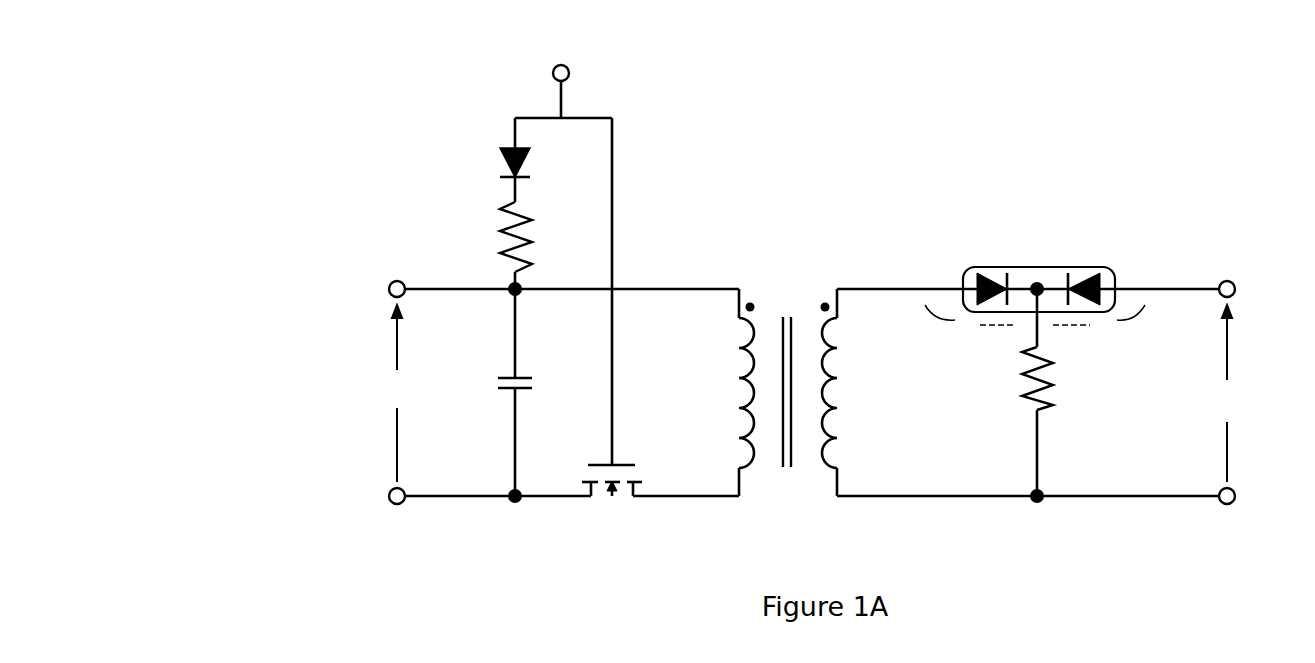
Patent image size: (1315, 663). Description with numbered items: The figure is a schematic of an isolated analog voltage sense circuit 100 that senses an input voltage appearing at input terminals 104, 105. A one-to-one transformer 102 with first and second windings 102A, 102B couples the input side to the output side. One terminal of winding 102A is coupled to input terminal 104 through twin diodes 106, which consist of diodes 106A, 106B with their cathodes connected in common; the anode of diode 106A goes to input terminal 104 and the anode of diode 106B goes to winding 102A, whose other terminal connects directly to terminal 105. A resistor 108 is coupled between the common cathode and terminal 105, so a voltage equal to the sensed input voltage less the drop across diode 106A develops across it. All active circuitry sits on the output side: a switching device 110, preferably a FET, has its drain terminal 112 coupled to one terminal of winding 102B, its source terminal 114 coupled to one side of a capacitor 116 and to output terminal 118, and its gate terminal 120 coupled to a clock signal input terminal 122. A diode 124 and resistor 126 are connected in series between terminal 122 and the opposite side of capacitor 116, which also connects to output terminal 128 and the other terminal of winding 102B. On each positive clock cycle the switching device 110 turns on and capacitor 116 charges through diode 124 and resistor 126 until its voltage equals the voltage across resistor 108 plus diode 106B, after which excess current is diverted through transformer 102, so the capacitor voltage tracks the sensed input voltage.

The isolated analog voltage sense circuit 100 is at (1215, 178).
The transformer 102 is at (788, 370).
The first winding 102A is at (836, 376).
The second winding 102B is at (740, 376).
The input terminal 104 is at (1234, 283).
The input terminal 105 is at (1234, 491).
The twin diodes 106 is at (1055, 267).
The twin diode 106A is at (1090, 272).
The twin diode 106B is at (988, 272).
The resistor 108 is at (1050, 400).
The switching device 110 is at (613, 481).
The drain terminal 112 is at (640, 498).
The source terminal 114 is at (582, 498).
The capacitor 116 is at (531, 379).
The output terminal 118 is at (402, 491).
The gate terminal 120 is at (610, 457).
The clock signal input terminal 122 is at (554, 67).
The diode 124 is at (505, 148).
The resistor 126 is at (530, 215).
The output terminal 128 is at (391, 283).